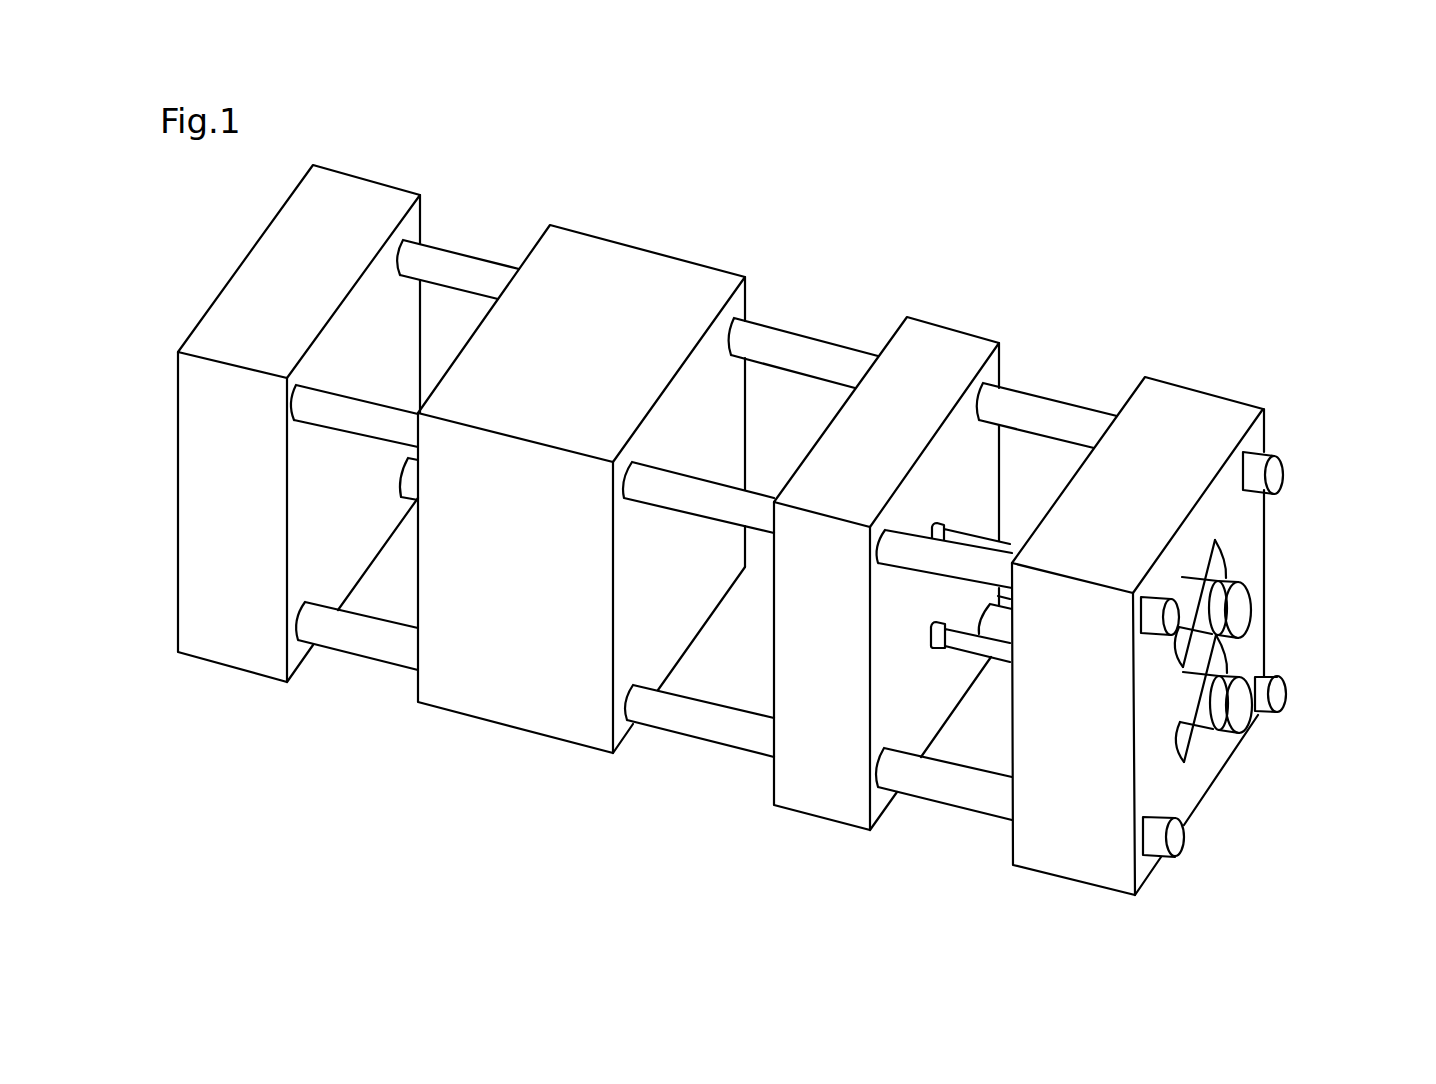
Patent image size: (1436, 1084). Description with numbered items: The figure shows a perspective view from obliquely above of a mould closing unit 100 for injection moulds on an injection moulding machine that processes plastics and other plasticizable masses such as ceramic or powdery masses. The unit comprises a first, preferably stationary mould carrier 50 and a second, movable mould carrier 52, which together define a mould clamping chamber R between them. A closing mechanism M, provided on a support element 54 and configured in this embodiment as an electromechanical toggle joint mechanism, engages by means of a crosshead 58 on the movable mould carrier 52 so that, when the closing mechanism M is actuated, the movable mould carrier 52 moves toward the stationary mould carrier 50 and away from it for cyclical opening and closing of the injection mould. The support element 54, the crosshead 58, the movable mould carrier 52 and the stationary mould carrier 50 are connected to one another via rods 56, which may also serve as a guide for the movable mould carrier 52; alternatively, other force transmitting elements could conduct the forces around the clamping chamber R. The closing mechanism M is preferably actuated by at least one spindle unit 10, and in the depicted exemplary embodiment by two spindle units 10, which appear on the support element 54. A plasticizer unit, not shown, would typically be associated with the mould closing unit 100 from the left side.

The mould closing unit 100 is at (592, 790).
The stationary mould carrier 50 is at (345, 223).
The movable mould carrier 52 is at (618, 297).
The support element 54 is at (1190, 435).
The rods 56 is at (465, 267).
The crosshead 58 is at (928, 367).
The spindle unit 10 is at (1293, 603).
The closing mechanism M is at (773, 430).
The mould clamping chamber R is at (387, 585).